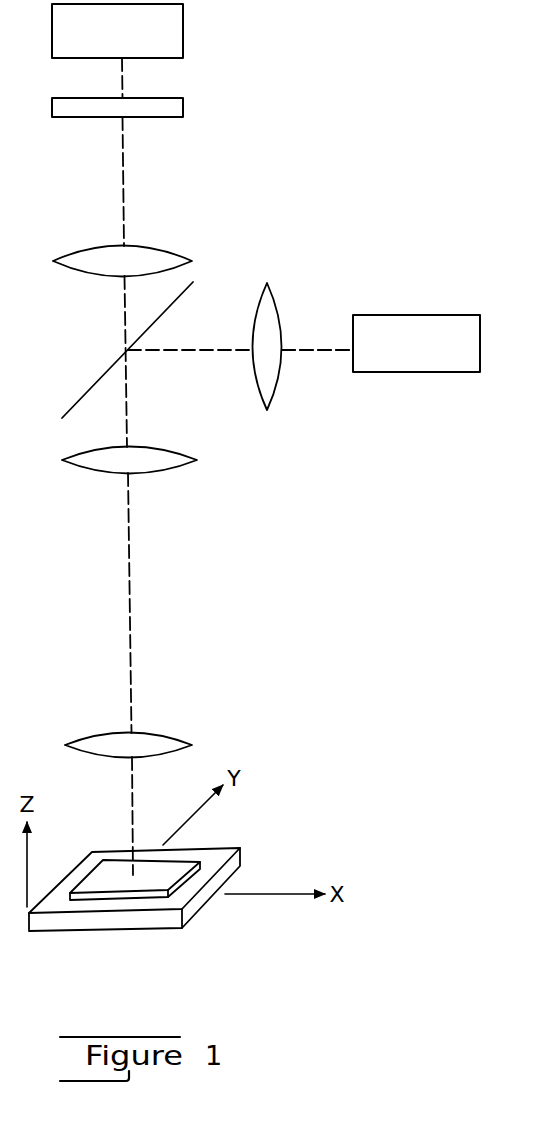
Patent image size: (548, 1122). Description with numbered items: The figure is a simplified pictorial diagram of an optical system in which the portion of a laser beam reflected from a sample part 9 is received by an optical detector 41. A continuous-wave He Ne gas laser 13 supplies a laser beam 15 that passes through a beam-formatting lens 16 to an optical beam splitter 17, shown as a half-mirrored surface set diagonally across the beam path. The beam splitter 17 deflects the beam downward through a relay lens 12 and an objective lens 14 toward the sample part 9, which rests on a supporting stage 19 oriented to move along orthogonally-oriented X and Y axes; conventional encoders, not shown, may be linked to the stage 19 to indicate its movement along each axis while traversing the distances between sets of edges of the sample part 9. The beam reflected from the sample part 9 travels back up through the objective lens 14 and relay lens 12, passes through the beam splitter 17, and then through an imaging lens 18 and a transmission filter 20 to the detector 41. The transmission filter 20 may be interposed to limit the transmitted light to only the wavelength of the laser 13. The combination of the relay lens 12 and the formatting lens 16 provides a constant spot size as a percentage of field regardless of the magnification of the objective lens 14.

The detector 41 is at (183, 33).
The transmission filter 20 is at (183, 107).
The imaging lens 18 is at (181, 252).
The optical beam splitter 17 is at (165, 308).
The beam-formatting lens 16 is at (270, 406).
The laser beam 15 is at (308, 349).
The laser 13 is at (475, 369).
The relay lens 12 is at (175, 467).
The objective lens 14 is at (190, 744).
The sample part 9 is at (192, 862).
The supporting stage 19 is at (150, 928).